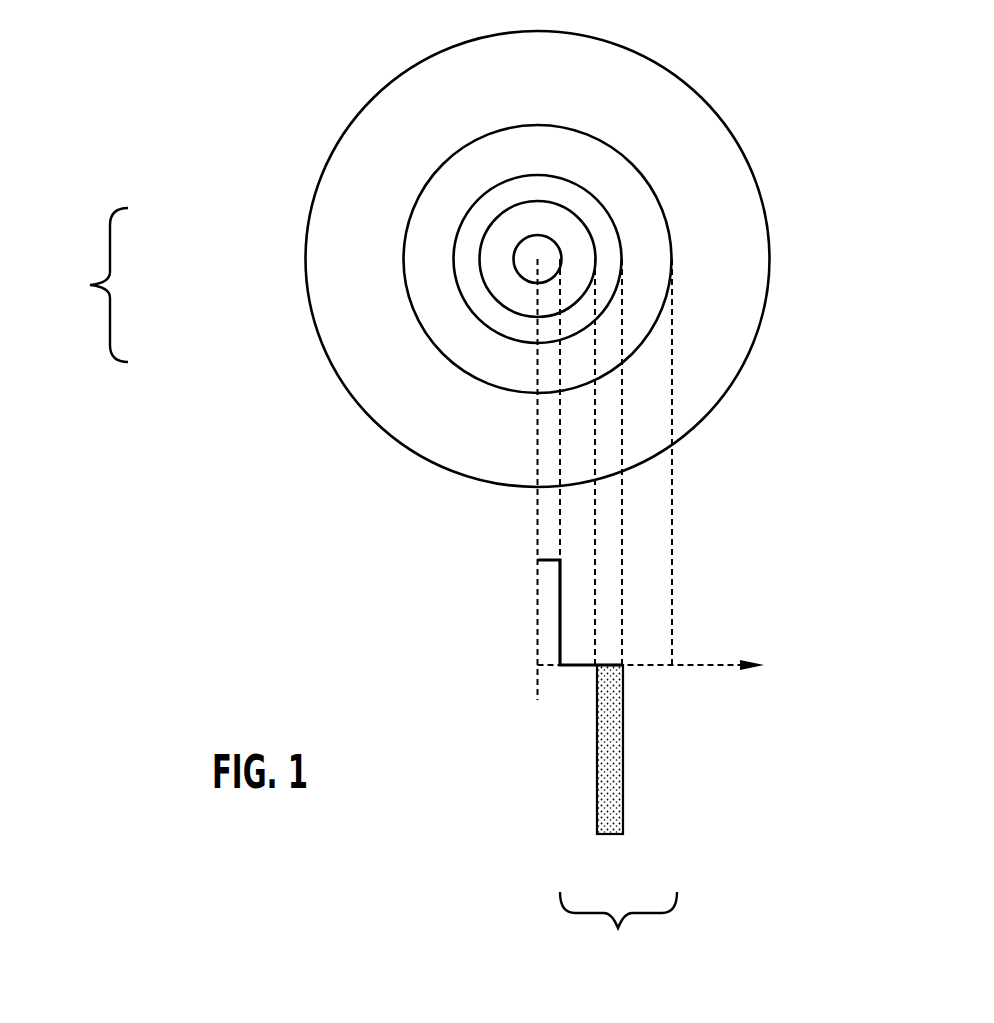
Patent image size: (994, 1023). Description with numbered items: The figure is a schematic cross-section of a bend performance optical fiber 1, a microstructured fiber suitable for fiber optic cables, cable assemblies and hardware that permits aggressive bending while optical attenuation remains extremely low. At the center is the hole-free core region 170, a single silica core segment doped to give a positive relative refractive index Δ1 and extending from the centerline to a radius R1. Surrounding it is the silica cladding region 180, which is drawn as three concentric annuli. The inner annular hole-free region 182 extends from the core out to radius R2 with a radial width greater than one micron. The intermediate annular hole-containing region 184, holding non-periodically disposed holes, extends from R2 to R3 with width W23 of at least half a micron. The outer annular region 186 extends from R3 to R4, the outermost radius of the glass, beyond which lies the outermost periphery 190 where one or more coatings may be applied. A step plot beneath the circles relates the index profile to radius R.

The bend performance optical fiber 1 is at (278, 38).
The core region 170 is at (522, 268).
The cladding region 180 is at (357, 591).
The inner annular hole-free region 182 is at (490, 258).
The intermediate annular hole-containing region 184 is at (467, 242).
The outer annular region 186 is at (440, 207).
The peripheral zone 190 is at (700, 271).